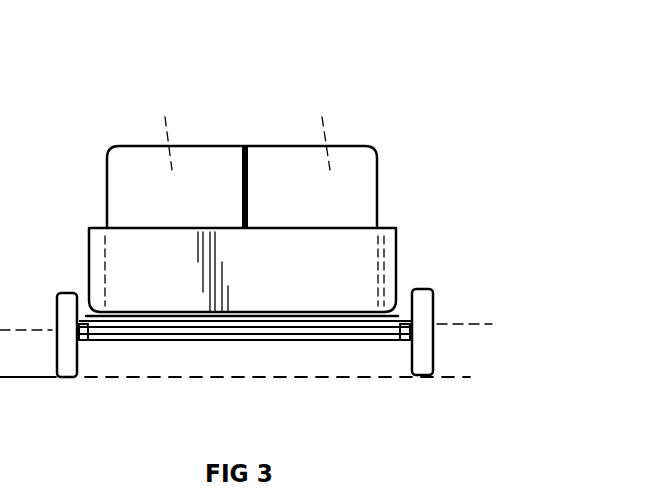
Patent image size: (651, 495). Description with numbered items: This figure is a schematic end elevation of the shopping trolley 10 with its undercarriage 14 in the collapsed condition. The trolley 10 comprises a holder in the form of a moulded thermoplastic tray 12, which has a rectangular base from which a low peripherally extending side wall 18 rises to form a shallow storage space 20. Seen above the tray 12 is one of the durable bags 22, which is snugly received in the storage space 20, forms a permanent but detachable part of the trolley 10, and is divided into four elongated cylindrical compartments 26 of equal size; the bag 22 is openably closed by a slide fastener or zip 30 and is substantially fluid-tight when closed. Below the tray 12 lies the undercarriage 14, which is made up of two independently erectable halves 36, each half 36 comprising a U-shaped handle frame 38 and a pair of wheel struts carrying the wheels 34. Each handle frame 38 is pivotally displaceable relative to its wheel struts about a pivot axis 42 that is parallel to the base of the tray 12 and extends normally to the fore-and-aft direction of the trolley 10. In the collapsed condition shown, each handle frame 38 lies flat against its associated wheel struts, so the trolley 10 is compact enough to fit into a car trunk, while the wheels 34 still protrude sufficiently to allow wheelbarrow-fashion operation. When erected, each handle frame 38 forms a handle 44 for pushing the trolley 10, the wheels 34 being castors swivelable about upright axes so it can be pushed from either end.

The shopping trolley 10 is at (388, 77).
The tray 12 is at (133, 265).
The undercarriage 14 is at (315, 340).
The side wall 18 is at (296, 281).
The storage space 20 is at (405, 250).
The bag 22 is at (360, 182).
The compartments 26 is at (240, 126).
The zip 30 is at (244, 146).
The wheels 34 is at (70, 294).
The halves 36 is at (245, 330).
The handle frame 38 is at (162, 341).
The pivot axis 42 is at (468, 316).
The handle 44 is at (245, 330).